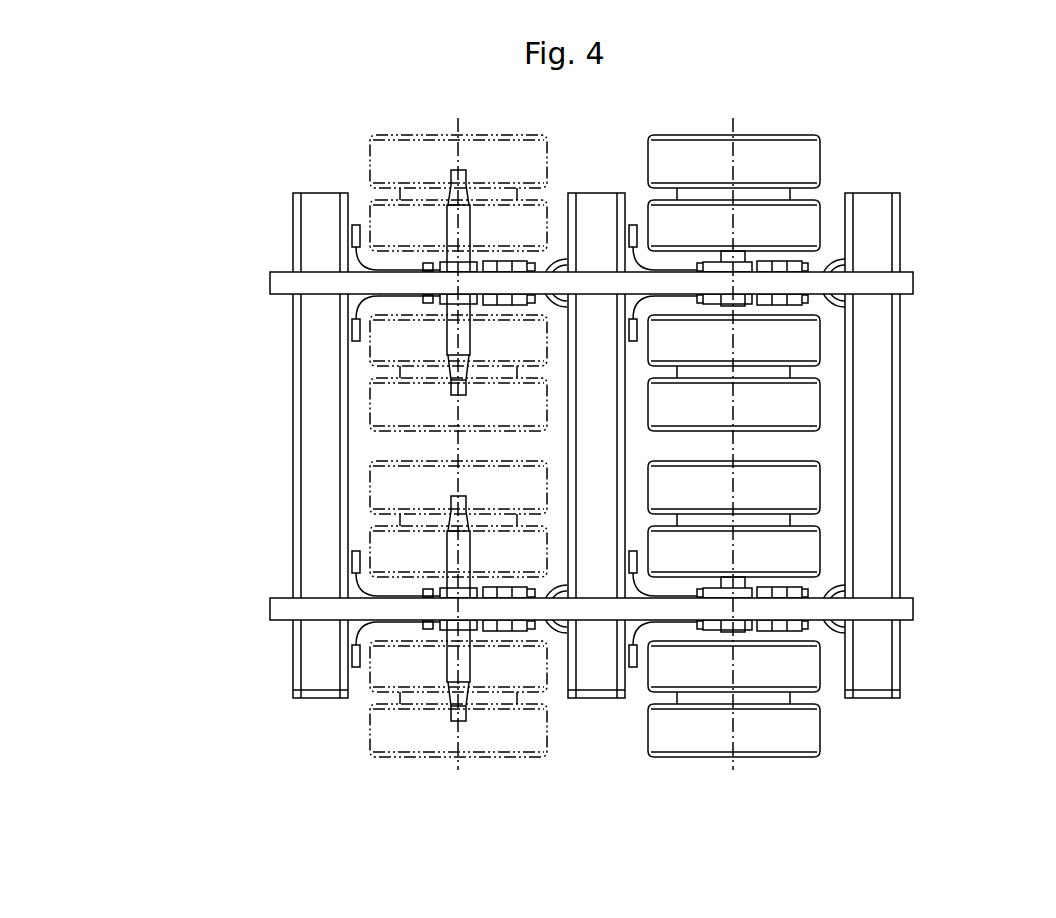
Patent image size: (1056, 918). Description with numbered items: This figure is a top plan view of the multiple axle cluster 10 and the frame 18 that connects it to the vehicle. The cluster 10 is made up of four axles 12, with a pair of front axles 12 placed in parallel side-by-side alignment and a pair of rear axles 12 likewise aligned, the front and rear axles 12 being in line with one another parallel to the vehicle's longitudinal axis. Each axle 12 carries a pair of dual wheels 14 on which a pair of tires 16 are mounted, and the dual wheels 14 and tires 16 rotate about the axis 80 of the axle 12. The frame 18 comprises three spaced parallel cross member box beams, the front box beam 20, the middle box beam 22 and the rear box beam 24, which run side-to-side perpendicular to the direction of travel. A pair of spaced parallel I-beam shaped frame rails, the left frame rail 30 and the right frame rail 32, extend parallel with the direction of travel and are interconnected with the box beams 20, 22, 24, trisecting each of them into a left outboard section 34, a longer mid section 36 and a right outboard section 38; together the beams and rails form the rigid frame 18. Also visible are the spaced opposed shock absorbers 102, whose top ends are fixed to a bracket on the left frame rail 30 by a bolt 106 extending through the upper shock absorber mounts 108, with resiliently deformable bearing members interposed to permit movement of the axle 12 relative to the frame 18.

The multiple axle cluster 10 is at (358, 390).
The axle 12 is at (455, 702).
The dual wheels 14 is at (748, 195).
The tires 16 is at (706, 165).
The frame 18 is at (928, 308).
The front box beam 20 is at (305, 240).
The middle box beam 22 is at (605, 200).
The rear box beam 24 is at (875, 200).
The left frame rail 30 is at (283, 610).
The right frame rail 32 is at (283, 283).
The left outboard section 34 is at (313, 665).
The mid section 36 is at (313, 430).
The right outboard section 38 is at (313, 210).
The axis 80 is at (457, 740).
The shock absorbers 102 is at (500, 582).
The bolt 106 is at (530, 590).
The upper shock absorber mounts 108 is at (515, 585).